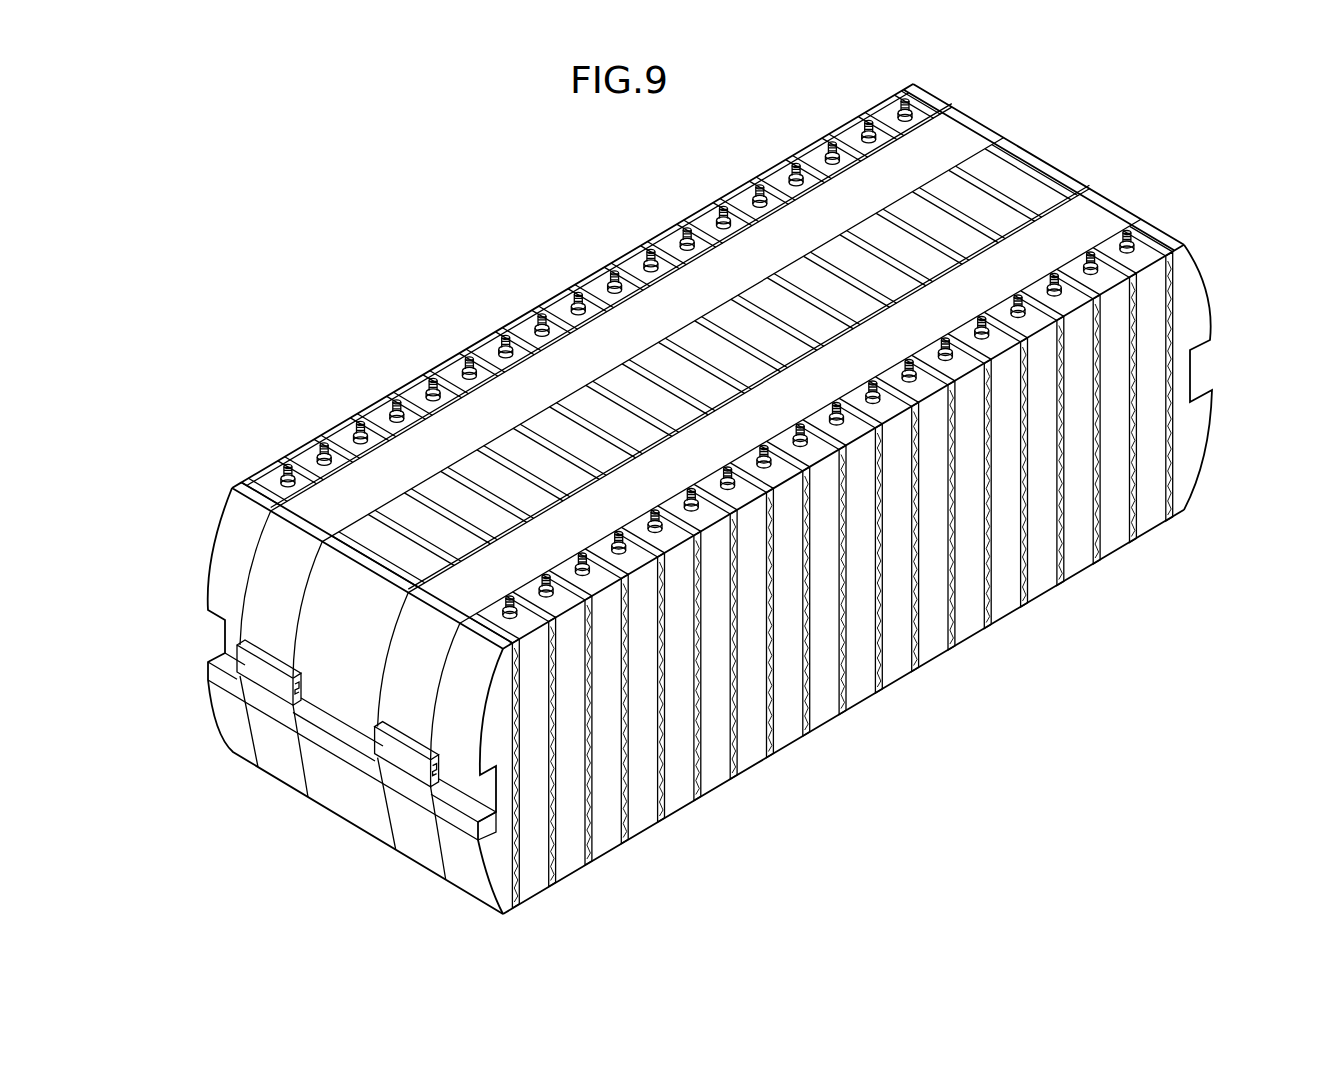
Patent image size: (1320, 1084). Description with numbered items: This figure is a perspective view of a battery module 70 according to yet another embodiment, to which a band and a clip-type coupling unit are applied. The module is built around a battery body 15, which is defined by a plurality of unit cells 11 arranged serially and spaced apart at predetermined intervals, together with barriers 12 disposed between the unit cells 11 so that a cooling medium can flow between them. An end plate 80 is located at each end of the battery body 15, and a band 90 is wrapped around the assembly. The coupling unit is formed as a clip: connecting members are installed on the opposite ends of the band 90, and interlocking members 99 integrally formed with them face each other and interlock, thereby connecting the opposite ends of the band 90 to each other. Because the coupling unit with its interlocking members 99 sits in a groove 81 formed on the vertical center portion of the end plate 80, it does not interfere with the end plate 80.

The battery module 70 is at (561, 166).
The unit cells 11 is at (777, 173).
The barriers 12 is at (647, 248).
The battery body 15 is at (528, 297).
The end plate 80 is at (1192, 440).
The groove 81 is at (1192, 362).
The band 90 is at (275, 582).
The interlocking members 99 is at (306, 700).